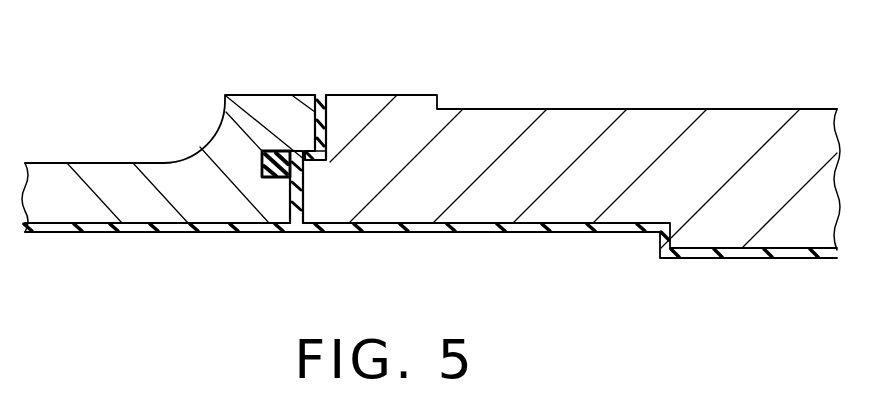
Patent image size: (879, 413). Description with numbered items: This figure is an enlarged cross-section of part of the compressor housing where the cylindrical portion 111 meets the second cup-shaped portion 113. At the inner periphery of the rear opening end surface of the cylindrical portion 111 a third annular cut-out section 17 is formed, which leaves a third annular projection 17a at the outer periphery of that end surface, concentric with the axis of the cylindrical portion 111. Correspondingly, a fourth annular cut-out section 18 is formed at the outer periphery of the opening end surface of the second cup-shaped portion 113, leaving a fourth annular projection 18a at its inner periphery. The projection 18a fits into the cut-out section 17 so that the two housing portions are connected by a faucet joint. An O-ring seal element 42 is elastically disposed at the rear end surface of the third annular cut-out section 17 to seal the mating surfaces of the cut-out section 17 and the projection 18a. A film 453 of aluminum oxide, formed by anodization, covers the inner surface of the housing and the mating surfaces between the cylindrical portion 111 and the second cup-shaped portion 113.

The cylindrical portion 111 is at (85, 173).
The second cup-shaped portion 113 is at (743, 130).
The third annular cut-out section 17 is at (317, 188).
The third annular projection 17a is at (305, 130).
The fourth annular cut-out section 18 is at (306, 95).
The fourth annular projection 18a is at (323, 178).
The O-ring seal element 42 is at (224, 98).
The film of aluminum oxide 453 is at (93, 233).